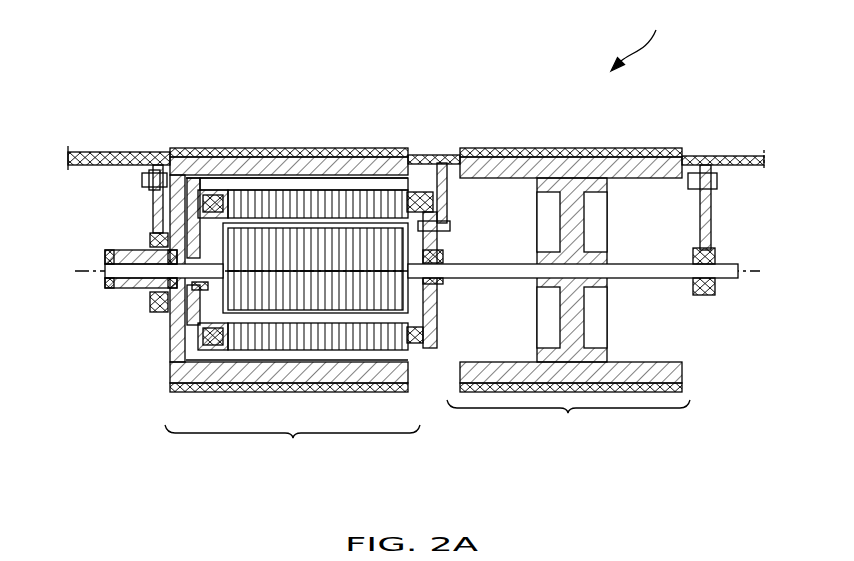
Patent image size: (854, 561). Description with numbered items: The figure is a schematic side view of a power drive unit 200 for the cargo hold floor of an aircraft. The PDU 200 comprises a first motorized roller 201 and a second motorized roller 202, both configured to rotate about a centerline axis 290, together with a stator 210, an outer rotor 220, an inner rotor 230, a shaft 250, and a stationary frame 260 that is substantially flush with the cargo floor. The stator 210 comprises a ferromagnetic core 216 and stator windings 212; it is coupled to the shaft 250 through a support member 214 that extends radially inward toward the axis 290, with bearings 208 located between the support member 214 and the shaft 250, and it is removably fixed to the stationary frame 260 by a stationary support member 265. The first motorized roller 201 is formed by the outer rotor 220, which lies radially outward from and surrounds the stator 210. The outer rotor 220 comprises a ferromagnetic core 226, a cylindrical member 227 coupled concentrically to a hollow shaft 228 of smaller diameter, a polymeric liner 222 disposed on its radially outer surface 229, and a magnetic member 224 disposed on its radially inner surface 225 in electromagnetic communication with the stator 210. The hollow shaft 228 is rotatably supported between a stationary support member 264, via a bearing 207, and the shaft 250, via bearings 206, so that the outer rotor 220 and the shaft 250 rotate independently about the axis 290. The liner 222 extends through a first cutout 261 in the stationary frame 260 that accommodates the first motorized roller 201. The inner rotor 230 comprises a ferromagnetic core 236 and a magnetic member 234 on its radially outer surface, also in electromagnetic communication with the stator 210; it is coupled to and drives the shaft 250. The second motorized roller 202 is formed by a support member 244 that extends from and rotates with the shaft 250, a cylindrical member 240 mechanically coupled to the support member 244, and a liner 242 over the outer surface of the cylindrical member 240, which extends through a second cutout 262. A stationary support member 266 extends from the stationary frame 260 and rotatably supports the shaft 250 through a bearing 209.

The power drive unit 200 is at (641, 39).
The first motorized roller 201 is at (292, 444).
The second motorized roller 202 is at (568, 426).
The bearings 206 is at (165, 287).
The bearing 207 is at (152, 245).
The bearings 208 is at (190, 288).
The bearing 209 is at (713, 280).
The stator 210 is at (243, 210).
The stator windings 212 is at (207, 194).
The support member 214 is at (436, 303).
The ferromagnetic core 216 is at (253, 332).
The outer rotor 220 is at (292, 150).
The liner 222 is at (322, 157).
The magnetic member 224 is at (270, 176).
The radially inner surface 225 is at (213, 352).
The ferromagnetic core 226 is at (288, 382).
The cylindrical member 227 is at (214, 172).
The hollow shaft 228 is at (105, 256).
The radially outer surface 229 is at (195, 388).
The inner rotor 230 is at (340, 253).
The magnetic member 234 is at (372, 228).
The ferromagnetic core 236 is at (363, 283).
The cylindrical member 240 is at (542, 176).
The liner 242 is at (493, 150).
The support member 244 is at (574, 188).
The shaft 250 is at (738, 263).
The stationary frame 260 is at (737, 152).
The first cutout 261 is at (157, 152).
The second cutout 262 is at (687, 152).
The stationary support member 264 is at (152, 200).
The stationary support member 265 is at (447, 183).
The stationary support member 266 is at (703, 210).
The axis 290 is at (73, 274).